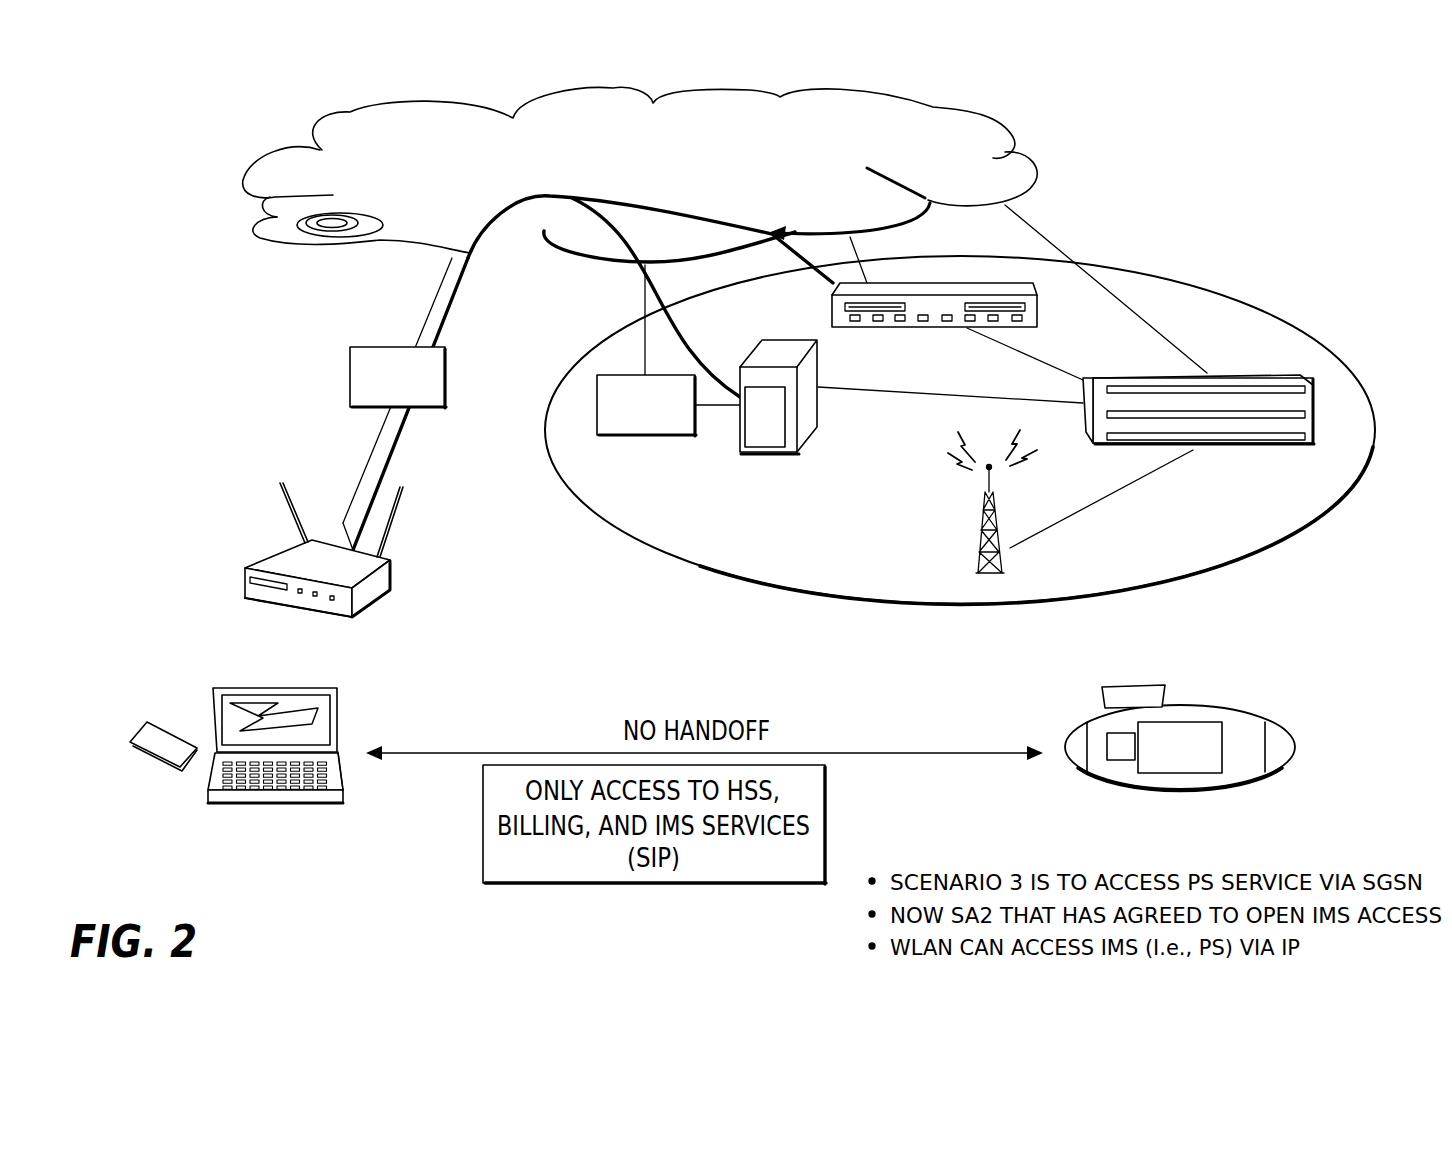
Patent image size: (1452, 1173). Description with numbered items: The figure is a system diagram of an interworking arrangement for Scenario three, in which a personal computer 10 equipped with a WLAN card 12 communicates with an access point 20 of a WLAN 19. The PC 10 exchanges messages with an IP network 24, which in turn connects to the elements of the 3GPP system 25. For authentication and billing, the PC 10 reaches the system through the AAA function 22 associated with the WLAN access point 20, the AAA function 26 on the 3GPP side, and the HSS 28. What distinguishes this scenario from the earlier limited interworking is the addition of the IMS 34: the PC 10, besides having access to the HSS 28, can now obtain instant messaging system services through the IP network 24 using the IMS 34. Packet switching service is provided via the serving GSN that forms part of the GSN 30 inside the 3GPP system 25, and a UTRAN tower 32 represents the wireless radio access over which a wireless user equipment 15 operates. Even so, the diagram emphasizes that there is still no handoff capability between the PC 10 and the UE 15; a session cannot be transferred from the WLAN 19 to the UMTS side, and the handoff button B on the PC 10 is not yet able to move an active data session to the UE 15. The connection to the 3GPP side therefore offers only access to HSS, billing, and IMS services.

The personal computer 10 is at (184, 668).
The WLAN card 12 is at (160, 765).
The user equipment 15 is at (1359, 747).
The WLAN 19 is at (448, 625).
The access point 20 is at (231, 555).
The AAA function 22 is at (349, 363).
The IP network 24 is at (300, 118).
The 3GPP system 25 is at (1217, 568).
The AAA function 26 is at (645, 437).
The HSS 28 is at (818, 428).
The GSN 30 is at (1221, 376).
The tower 32 is at (983, 538).
The IMS 34 is at (1055, 298).
The handoff button B is at (343, 755).